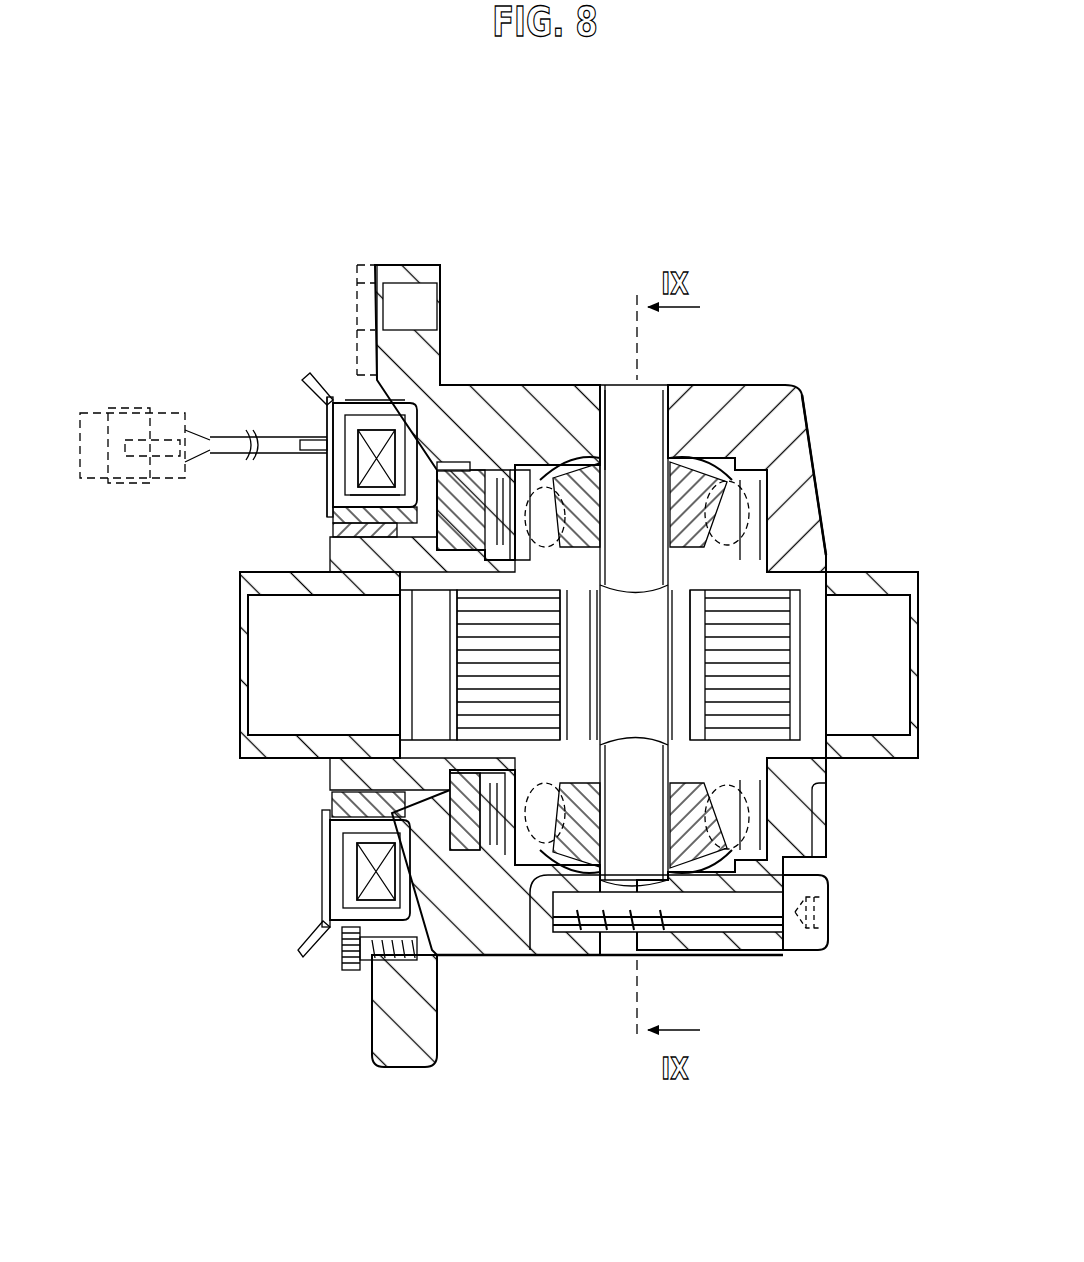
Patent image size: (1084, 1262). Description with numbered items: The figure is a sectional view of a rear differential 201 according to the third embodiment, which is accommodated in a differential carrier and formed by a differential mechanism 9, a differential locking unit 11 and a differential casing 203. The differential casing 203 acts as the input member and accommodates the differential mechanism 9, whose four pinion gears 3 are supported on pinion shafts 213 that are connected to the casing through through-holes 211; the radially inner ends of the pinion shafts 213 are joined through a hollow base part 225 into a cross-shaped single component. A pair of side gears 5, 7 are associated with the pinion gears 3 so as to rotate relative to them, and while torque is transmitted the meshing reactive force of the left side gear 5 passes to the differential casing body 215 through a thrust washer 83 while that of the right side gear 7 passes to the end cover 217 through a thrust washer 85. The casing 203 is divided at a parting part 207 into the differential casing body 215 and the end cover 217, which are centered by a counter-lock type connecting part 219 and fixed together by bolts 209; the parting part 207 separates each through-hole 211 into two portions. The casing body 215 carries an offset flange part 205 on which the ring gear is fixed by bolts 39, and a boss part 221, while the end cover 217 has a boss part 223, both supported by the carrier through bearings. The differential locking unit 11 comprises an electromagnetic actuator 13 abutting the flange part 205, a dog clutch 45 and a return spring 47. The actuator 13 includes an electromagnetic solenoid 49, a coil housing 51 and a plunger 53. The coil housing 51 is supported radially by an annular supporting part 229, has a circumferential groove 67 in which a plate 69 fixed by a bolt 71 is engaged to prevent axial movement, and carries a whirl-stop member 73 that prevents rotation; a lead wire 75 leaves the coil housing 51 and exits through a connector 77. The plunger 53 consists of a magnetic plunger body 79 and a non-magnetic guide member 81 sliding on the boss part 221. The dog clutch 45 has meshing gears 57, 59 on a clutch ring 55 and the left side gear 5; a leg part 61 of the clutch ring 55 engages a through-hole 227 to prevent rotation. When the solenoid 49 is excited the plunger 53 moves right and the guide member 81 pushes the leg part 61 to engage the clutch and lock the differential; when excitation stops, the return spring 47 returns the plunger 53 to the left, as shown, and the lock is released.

The pinion gear 3 is at (592, 488).
The left side gear 5 is at (562, 548).
The right side gear 7 is at (660, 590).
The differential mechanism 9 is at (520, 1022).
The differential locking unit 11 is at (238, 288).
The electromagnetic actuator 13 is at (316, 373).
The bolt 39 is at (357, 262).
The dog clutch 45 is at (505, 398).
The return spring 47 is at (448, 600).
The electromagnetic solenoid 49 is at (440, 945).
The coil housing 51 is at (335, 870).
The plunger 53 is at (268, 516).
The clutch ring 55 is at (466, 462).
The meshing gear 57 is at (472, 474).
The meshing gear 59 is at (548, 460).
The leg part 61 is at (428, 514).
The circumferential groove 67 is at (355, 400).
The plate 69 is at (368, 965).
The bolt 71 is at (342, 955).
The whirl-stop member 73 is at (316, 912).
The lead wire 75 is at (225, 437).
The connector 77 is at (128, 410).
The plunger body 79 is at (330, 518).
The guide member 81 is at (330, 533).
The thrust washer 83 is at (400, 605).
The thrust washer 85 is at (790, 600).
The rear differential 201 is at (792, 183).
The differential casing 203 is at (752, 328).
The flange part 205 is at (417, 280).
The parting part 207 is at (657, 957).
The bolt 209 is at (818, 950).
The through-hole 211 is at (612, 395).
The pinion shaft 213 is at (612, 536).
The differential casing body 215 is at (555, 383).
The end cover 217 is at (804, 383).
The connecting part 219 is at (612, 955).
The boss part 221 is at (258, 760).
The boss part 223 is at (890, 760).
The hollow base part 225 is at (630, 625).
The through-hole 227 is at (442, 466).
The annular supporting part 229 is at (372, 395).